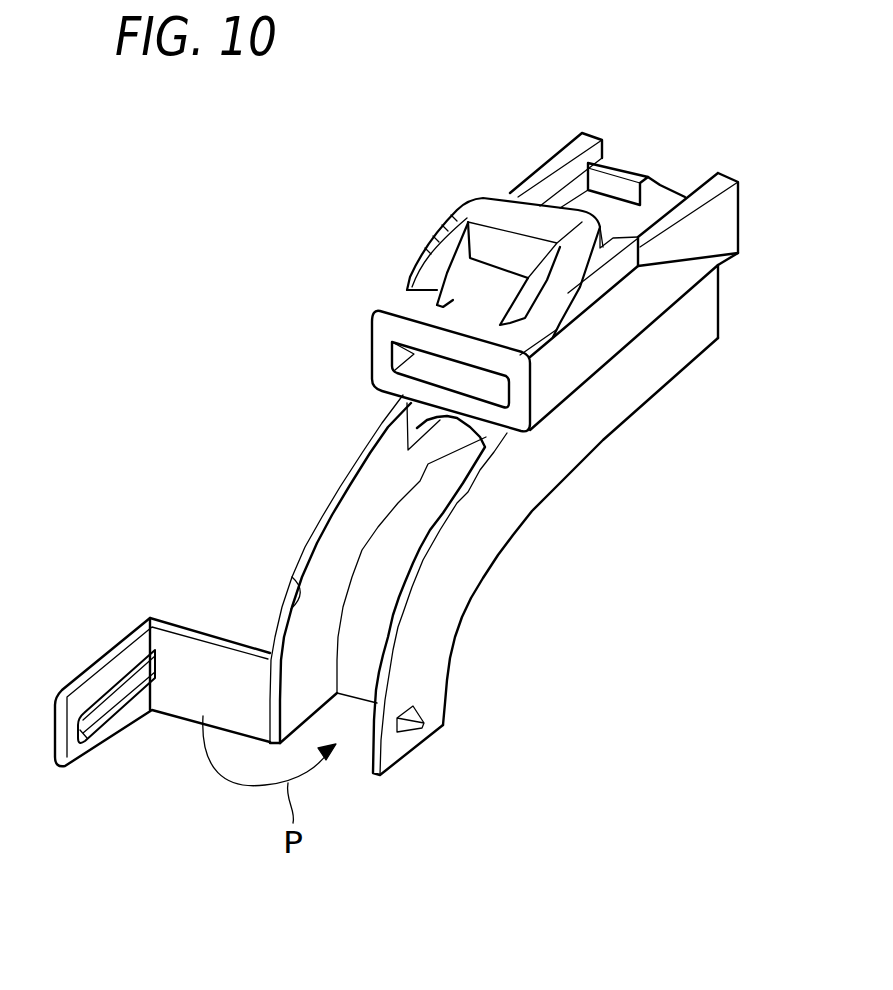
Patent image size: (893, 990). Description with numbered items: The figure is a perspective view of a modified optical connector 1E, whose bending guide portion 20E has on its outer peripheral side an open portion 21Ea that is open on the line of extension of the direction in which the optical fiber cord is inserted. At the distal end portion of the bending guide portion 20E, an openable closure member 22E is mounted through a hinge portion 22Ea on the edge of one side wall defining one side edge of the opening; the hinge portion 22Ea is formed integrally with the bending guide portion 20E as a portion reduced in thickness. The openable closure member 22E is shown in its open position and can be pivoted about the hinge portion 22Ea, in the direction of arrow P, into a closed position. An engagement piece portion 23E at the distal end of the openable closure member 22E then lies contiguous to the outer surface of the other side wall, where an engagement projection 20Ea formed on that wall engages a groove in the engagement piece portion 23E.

The optical connector 1E is at (466, 180).
The bending guide portion 20E is at (483, 568).
The engagement projection 20Ea is at (412, 731).
The open portion 21Ea is at (301, 583).
The openable closure member 22E is at (155, 617).
The hinge portion 22Ea is at (270, 653).
The engagement piece portion 23E is at (133, 724).